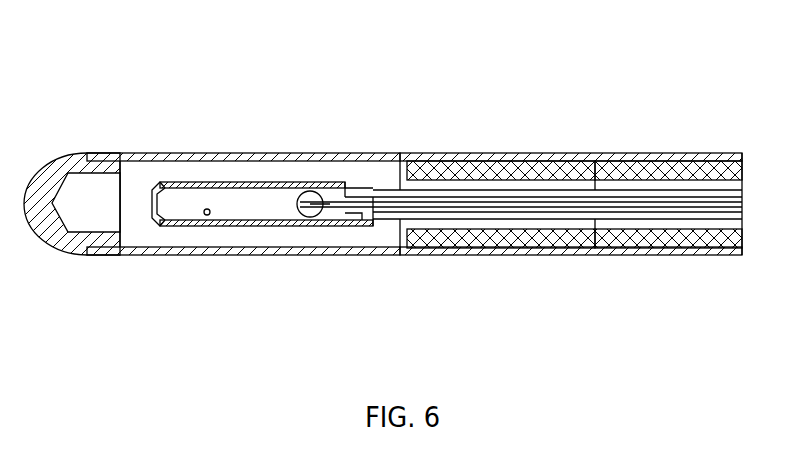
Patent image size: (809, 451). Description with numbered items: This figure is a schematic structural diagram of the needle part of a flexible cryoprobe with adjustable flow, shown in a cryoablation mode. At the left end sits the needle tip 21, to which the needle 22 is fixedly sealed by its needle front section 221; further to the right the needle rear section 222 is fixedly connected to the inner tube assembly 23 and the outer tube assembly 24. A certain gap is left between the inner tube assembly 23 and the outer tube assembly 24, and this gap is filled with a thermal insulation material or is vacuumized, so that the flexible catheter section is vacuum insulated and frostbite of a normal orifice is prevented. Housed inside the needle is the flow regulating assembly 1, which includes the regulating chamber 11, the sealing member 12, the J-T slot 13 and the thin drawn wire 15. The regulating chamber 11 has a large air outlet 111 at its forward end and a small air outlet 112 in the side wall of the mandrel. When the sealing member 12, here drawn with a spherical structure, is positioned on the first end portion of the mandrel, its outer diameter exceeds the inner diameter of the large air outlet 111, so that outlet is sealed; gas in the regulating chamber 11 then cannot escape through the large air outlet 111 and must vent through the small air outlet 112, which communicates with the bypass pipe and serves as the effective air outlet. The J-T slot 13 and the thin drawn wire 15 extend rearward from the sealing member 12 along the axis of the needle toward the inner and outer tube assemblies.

The flow regulating assembly 1 is at (402, 197).
The regulating chamber 11 is at (215, 280).
The large air outlet 111 is at (157, 208).
The small air outlet 112 is at (208, 216).
The sealing member 12 is at (313, 216).
The J-T slot 13 is at (470, 213).
The thin drawn wire 15 is at (604, 221).
The needle tip 21 is at (47, 193).
The needle 22 is at (414, 136).
The needle front section 221 is at (185, 157).
The needle rear section 222 is at (512, 157).
The inner tube assembly 23 is at (638, 157).
The outer tube assembly 24 is at (705, 157).